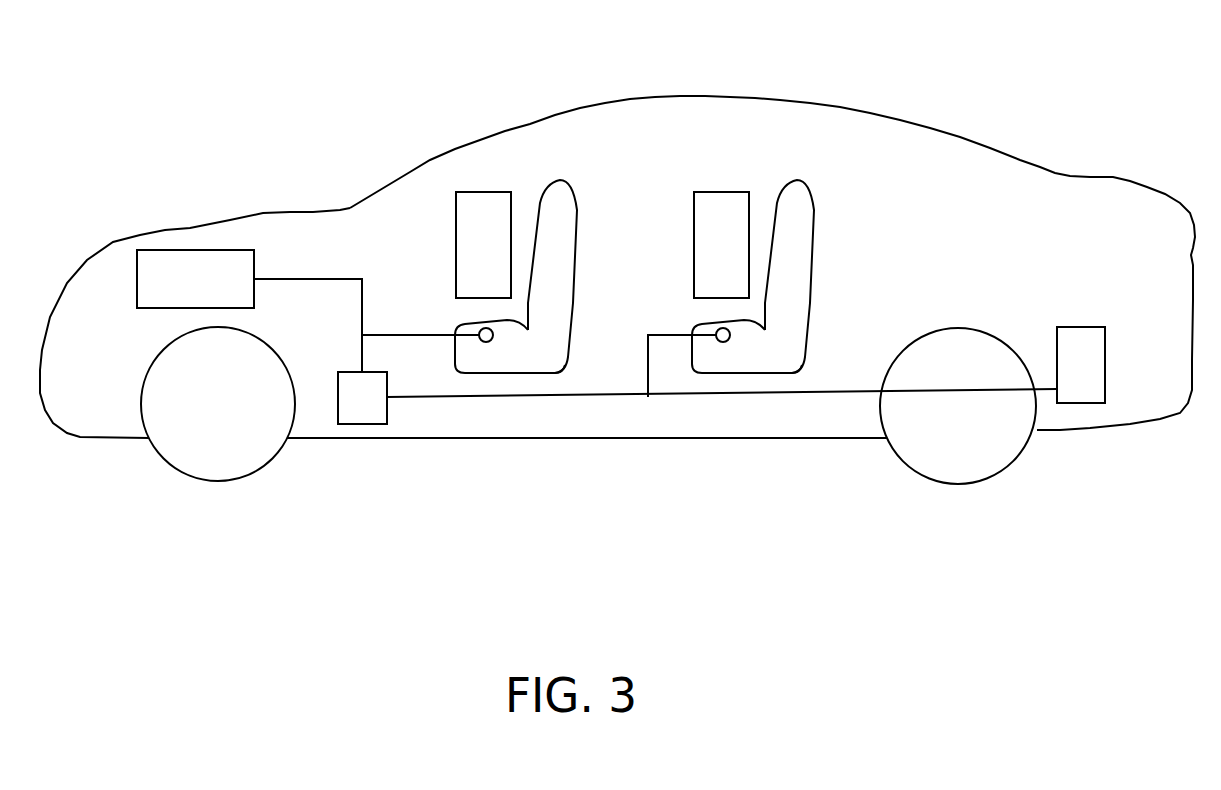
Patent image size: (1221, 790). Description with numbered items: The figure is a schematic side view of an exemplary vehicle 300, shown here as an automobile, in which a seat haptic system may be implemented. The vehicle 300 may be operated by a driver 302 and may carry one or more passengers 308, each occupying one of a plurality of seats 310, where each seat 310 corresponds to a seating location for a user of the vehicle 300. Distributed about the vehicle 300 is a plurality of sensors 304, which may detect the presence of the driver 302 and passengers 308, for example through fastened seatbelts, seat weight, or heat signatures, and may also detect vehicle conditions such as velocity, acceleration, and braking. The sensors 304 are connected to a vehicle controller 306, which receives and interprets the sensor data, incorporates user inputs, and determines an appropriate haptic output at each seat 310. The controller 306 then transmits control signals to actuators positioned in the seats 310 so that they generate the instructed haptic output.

The vehicle 300 is at (677, 95).
The driver 302 is at (478, 200).
The sensors 304 is at (160, 308).
The vehicle controller 306 is at (350, 424).
The passengers 308 is at (720, 205).
The seats 310 is at (520, 363).